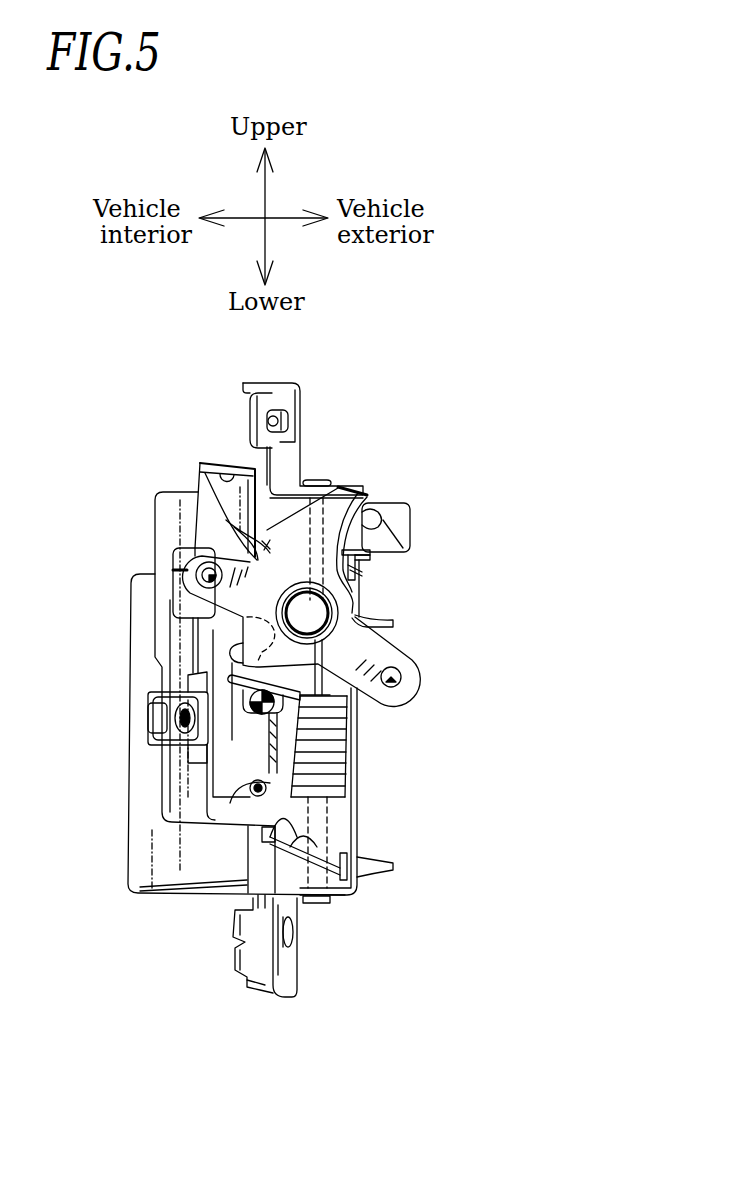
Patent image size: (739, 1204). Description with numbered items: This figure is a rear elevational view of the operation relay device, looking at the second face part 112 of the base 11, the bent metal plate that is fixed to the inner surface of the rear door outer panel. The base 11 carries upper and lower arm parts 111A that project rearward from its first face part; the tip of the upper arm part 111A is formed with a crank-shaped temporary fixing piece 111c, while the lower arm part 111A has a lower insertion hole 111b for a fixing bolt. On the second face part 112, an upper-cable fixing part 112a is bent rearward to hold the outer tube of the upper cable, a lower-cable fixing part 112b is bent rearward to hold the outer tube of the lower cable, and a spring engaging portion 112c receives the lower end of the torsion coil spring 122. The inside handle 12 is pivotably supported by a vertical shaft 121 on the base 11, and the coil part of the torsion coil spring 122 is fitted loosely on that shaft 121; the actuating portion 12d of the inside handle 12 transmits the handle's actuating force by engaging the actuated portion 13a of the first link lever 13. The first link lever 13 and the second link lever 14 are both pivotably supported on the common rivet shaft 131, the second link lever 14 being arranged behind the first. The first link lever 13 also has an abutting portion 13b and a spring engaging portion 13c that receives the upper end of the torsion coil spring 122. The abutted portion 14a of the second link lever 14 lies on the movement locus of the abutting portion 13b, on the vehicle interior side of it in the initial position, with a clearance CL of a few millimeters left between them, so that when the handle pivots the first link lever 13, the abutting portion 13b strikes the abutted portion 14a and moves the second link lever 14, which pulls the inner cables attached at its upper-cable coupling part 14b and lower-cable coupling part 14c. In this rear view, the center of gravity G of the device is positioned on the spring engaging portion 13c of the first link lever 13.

The base 11 is at (150, 799).
The inside handle 12 is at (128, 631).
The actuating portion 12d is at (354, 490).
The first link lever 13 is at (370, 556).
The actuated portion 13a is at (400, 503).
The abutting portion 13b is at (205, 530).
The spring engaging portion 13c is at (270, 727).
The second link lever 14 is at (427, 678).
The abutted portion 14a is at (215, 556).
The upper-cable coupling part 14b is at (207, 577).
The lower-cable coupling part 14c is at (393, 685).
The arm part 111A is at (274, 383).
The lower insertion hole 111b is at (291, 940).
The temporary fixing piece 111c is at (249, 420).
The second face part 112 is at (350, 823).
The upper-cable fixing part 112a is at (243, 463).
The lower-cable fixing part 112b is at (268, 810).
The spring engaging portion 112c is at (165, 820).
The shaft 121 is at (327, 537).
The torsion coil spring 122 is at (347, 777).
The rivet shaft 131 is at (336, 613).
The clearance CL is at (265, 548).
The center of gravity G is at (251, 696).